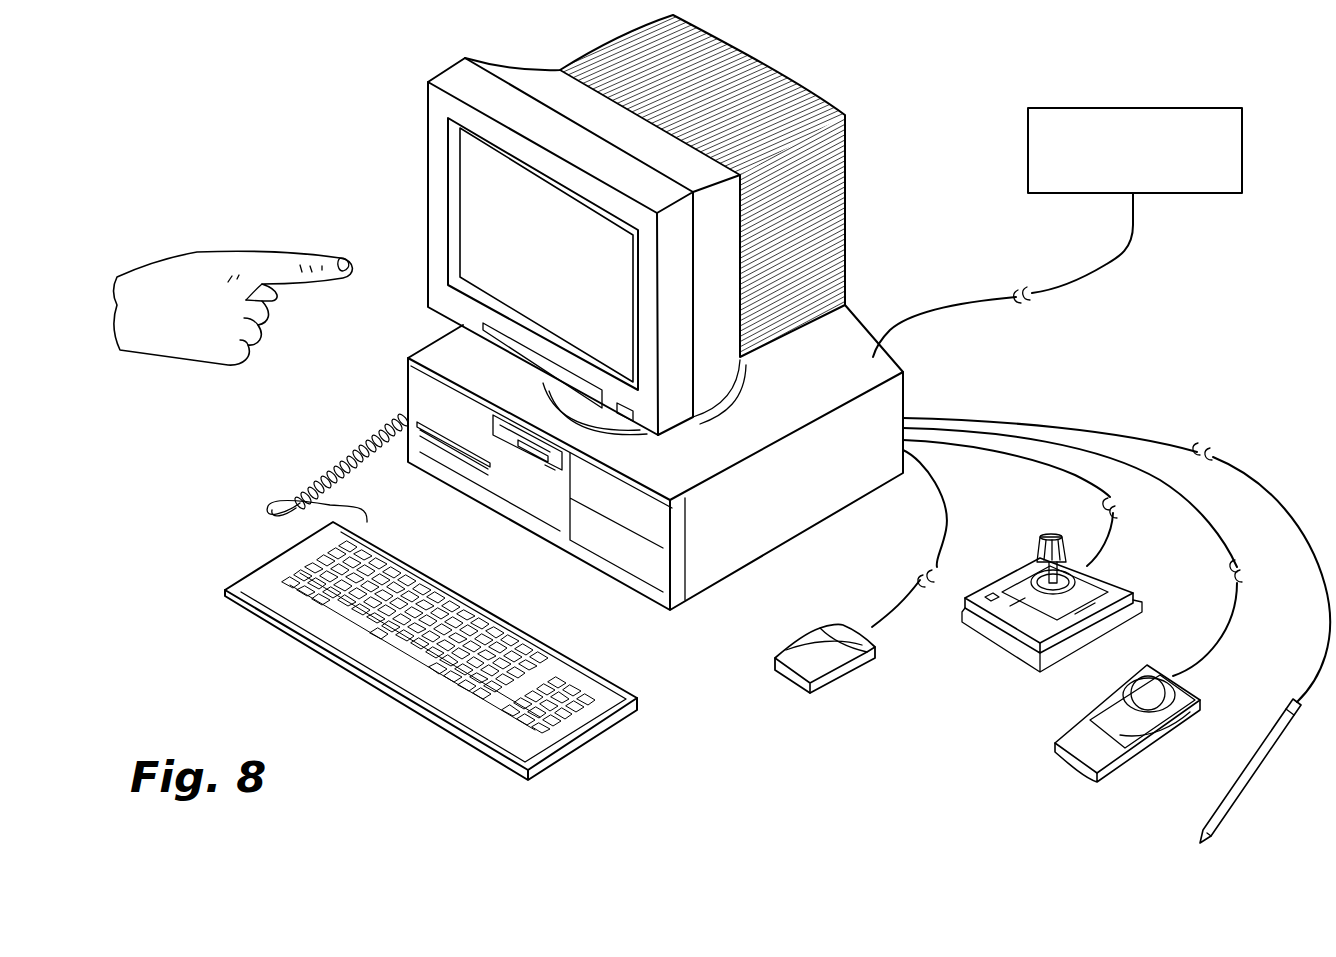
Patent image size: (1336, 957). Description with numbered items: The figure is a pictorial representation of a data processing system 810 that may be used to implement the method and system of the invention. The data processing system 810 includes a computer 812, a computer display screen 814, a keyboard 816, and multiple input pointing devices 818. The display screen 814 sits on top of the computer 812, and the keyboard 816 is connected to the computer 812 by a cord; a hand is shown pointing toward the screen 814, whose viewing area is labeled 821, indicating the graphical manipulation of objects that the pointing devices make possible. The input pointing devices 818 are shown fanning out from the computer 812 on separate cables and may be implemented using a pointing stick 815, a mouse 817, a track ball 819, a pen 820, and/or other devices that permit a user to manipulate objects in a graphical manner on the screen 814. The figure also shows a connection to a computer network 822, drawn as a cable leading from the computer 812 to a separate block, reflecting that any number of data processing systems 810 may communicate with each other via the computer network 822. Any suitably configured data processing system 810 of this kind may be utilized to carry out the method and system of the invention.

The data processing system 810 is at (380, 129).
The computer 812 is at (810, 510).
The computer display screen 814 is at (840, 237).
The pointing stick 815 is at (1007, 636).
The keyboard 816 is at (422, 697).
The mouse 817 is at (853, 658).
The input pointing devices 818 is at (874, 762).
The track ball 819 is at (1155, 733).
The pen 820 is at (1267, 758).
The display screen 821 is at (500, 211).
The computer network 822 is at (1107, 265).